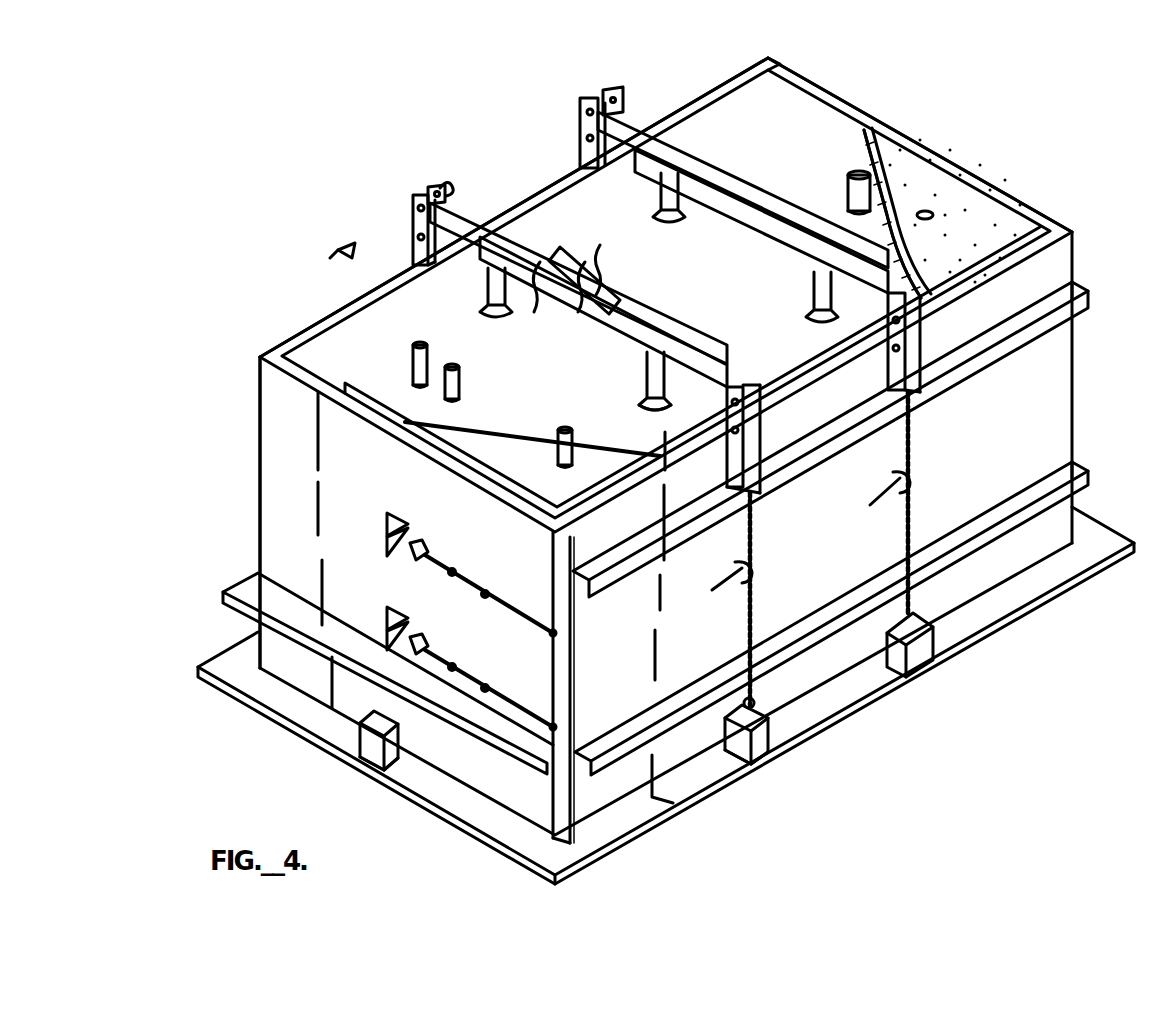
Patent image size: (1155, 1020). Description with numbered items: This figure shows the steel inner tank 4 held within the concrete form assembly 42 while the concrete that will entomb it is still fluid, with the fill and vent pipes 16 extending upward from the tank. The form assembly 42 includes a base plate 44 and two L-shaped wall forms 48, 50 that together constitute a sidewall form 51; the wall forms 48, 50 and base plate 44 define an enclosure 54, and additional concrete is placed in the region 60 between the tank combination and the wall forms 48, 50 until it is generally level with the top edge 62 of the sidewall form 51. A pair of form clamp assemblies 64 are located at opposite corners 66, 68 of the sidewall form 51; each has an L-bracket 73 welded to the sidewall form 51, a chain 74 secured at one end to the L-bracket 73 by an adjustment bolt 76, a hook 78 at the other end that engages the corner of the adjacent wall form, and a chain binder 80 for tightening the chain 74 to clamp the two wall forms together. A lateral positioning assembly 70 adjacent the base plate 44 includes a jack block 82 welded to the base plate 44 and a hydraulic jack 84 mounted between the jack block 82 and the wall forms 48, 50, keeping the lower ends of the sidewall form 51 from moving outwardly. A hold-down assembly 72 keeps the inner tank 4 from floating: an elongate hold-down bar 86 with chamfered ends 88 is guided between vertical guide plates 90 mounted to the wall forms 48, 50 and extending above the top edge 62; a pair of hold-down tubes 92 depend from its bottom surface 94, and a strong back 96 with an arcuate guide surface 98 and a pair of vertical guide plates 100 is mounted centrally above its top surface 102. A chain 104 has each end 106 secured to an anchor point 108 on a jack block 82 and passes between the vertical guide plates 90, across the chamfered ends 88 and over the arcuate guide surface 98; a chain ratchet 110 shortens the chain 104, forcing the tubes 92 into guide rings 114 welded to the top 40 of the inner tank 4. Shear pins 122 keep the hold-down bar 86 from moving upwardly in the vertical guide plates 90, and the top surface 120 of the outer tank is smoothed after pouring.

The inner tank 4 is at (940, 185).
The fill and vent pipes 16 is at (430, 362).
The top 40 is at (880, 150).
The concrete form assembly 42 is at (158, 326).
The base plate 44 is at (862, 703).
The wall form 48 is at (1050, 372).
The wall form 50 is at (275, 465).
The sidewall form 51 is at (258, 380).
The enclosure 54 is at (835, 122).
The region 60 is at (315, 363).
The top edge 62 is at (1022, 210).
The form clamp assembly 64 is at (465, 610).
The corner 66 is at (548, 812).
The corner 68 is at (790, 72).
The lateral positioning assembly 70 is at (362, 755).
The hold-down assembly 72 is at (603, 85).
The L-bracket 73 is at (398, 518).
The chain 74 is at (498, 608).
The adjustment bolt 76 is at (405, 555).
The hook 78 is at (560, 632).
The chain binder 80 is at (458, 578).
The jack block 82 is at (390, 768).
The hydraulic jack 84 is at (885, 640).
The hold-down bar 86 is at (590, 318).
The chamfered ends 88 is at (762, 395).
The vertical guide plates 90 is at (437, 196).
The hold-down tubes 92 is at (510, 310).
The bottom surface 94 is at (618, 333).
The strong back 96 is at (598, 248).
The arcuate guide surface 98 is at (657, 283).
The vertical guide plates 100 is at (570, 318).
The top surface 102 is at (710, 313).
The chain 104 is at (910, 445).
The end 106 is at (758, 692).
The anchor point 108 is at (810, 712).
The chain ratchet 110 is at (908, 492).
The guide rings 114 is at (655, 410).
The top surface 120 is at (1047, 178).
The shear pins 122 is at (352, 242).